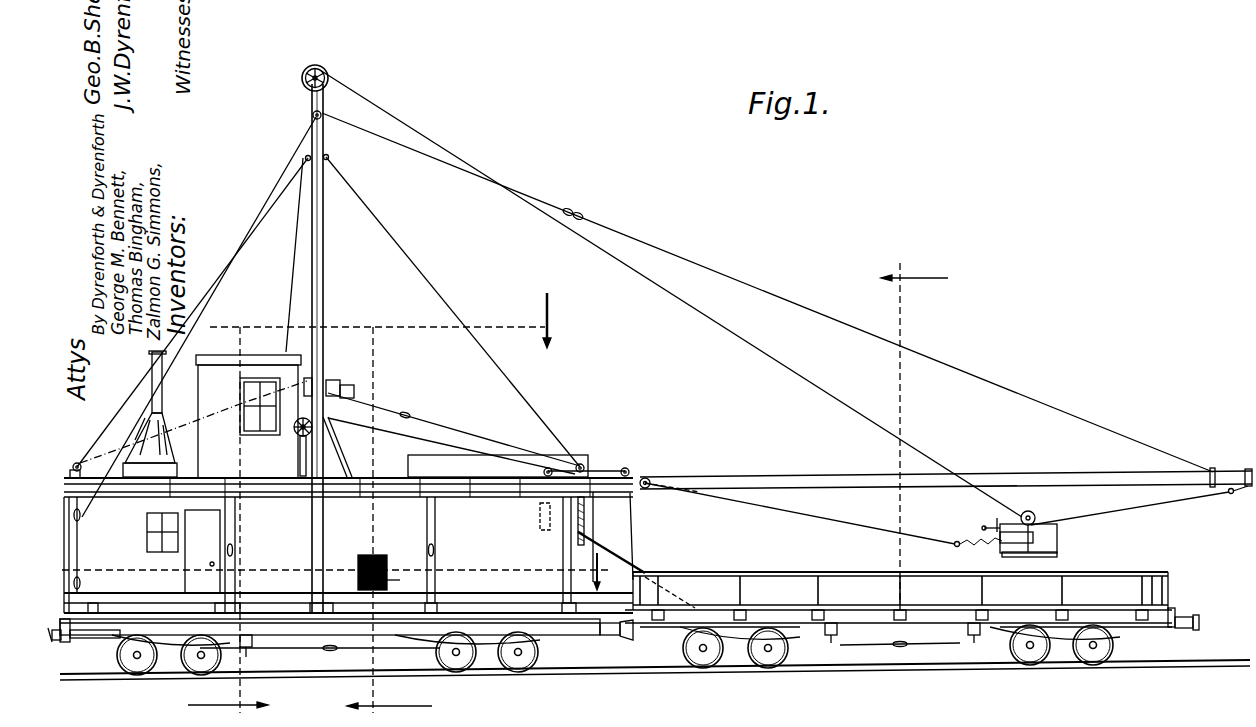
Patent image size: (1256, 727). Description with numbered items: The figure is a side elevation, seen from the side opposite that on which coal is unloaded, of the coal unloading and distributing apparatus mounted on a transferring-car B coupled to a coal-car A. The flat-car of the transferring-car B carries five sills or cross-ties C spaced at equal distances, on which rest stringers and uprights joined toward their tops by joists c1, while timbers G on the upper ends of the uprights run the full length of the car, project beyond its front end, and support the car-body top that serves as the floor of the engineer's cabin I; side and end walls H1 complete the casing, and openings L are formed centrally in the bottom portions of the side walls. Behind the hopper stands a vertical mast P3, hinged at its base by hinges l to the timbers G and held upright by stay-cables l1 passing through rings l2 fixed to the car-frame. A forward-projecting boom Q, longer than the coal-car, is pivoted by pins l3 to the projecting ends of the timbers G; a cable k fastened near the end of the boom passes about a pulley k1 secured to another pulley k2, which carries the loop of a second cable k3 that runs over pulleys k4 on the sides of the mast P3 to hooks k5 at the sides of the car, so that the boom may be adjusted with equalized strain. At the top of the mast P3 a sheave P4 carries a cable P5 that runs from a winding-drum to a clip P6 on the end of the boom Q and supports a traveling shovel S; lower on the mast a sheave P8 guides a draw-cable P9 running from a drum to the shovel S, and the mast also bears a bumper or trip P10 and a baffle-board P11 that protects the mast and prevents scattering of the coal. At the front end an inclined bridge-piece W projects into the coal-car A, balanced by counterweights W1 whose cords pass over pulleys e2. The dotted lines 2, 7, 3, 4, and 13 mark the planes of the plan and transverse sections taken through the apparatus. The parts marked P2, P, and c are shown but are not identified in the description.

The mast P3 is at (325, 258).
The sheave P4 is at (322, 66).
The pulleys k4 is at (312, 114).
The second cable k3 is at (284, 178).
The stay-cables l1 is at (110, 448).
The cable P5 is at (290, 308).
The rings l2 is at (75, 462).
The cable k is at (1035, 402).
The pulley k2 is at (567, 207).
The pulley k1 is at (577, 224).
The boom Q is at (1000, 481).
The clip P6 is at (312, 386).
The timbers G is at (647, 490).
The draw-cable P9 is at (816, 514).
The traveling shovel S is at (1105, 524).
The jib P2 is at (446, 462).
The bumper or trip P10 is at (353, 392).
The sheave P8 is at (298, 437).
The baffle-board P11 is at (343, 456).
The pulleys e2 is at (548, 467).
The joists c1 is at (602, 468).
The pins l3 is at (648, 477).
The engineer's cabin I is at (214, 386).
The hooks k5 is at (81, 517).
The sills or cross-ties C is at (92, 610).
The platform P is at (488, 582).
The openings L is at (377, 556).
The hinges l is at (397, 581).
The counterweights W1 is at (540, 515).
The side and end walls H1 is at (497, 527).
The rack c is at (588, 523).
The bridge-piece W is at (640, 570).
The section line 7 is at (604, 571).
The transferring-car B is at (340, 644).
The coal-car A is at (912, 609).
The section line 2 is at (389, 320).
The section line 13 is at (228, 527).
The section line 4 is at (389, 527).
The section line 3 is at (914, 425).